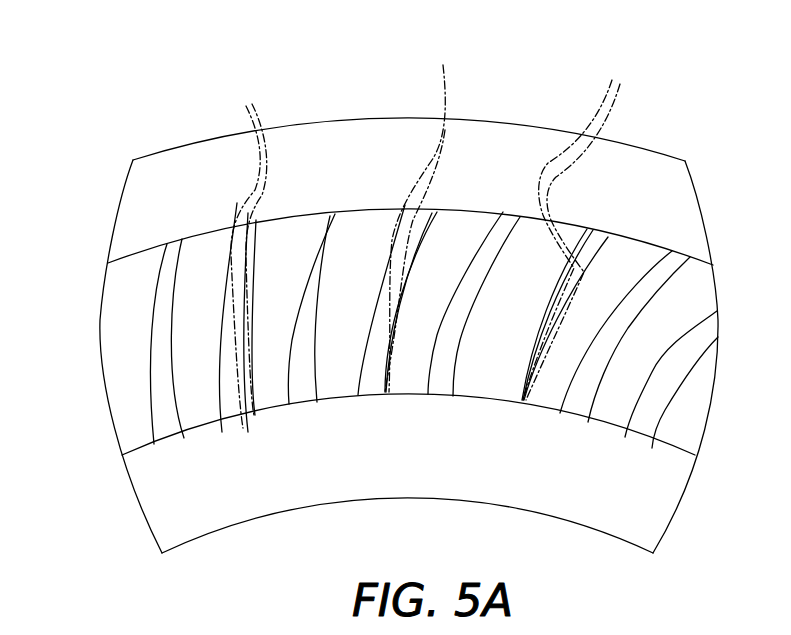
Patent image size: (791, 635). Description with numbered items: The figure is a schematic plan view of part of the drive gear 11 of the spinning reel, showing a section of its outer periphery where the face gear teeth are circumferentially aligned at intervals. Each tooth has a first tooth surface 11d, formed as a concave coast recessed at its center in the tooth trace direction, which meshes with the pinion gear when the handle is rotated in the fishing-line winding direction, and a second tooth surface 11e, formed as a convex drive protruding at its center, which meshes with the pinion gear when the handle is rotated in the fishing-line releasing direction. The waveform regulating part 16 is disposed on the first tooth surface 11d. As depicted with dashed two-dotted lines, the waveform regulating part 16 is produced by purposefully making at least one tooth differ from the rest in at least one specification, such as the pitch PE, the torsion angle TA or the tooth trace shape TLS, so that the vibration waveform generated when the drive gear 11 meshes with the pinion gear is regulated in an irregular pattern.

The drive gear 11 is at (158, 134).
The waveform regulating part 16 is at (237, 272).
The pitch PE is at (242, 250).
The first tooth surface 11d is at (303, 347).
The second tooth surface 11e is at (238, 356).
The tooth trace shape TLS is at (429, 212).
The torsion angle TA is at (574, 223).